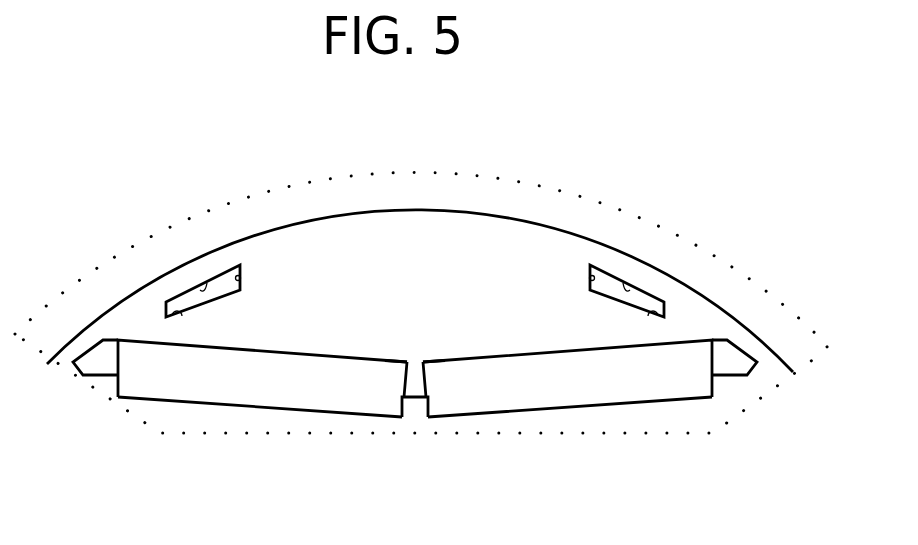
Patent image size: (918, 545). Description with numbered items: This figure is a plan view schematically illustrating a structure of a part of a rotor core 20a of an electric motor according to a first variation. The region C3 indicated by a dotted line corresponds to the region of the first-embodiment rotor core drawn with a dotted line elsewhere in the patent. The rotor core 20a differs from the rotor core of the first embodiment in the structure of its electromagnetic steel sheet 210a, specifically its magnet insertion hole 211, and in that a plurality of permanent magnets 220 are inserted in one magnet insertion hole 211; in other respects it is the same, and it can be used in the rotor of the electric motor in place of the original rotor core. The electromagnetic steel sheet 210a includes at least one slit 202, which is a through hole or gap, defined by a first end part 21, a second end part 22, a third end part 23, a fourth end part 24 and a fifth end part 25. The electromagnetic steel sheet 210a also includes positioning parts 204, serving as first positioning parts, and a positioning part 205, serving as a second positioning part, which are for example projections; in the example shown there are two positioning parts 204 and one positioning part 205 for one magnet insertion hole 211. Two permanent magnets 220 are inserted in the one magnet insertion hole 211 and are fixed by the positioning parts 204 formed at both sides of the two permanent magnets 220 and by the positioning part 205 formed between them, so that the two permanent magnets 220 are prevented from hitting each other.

The rotor core 20a is at (100, 142).
The electromagnetic steel sheet 210a is at (324, 216).
The region C3 is at (421, 172).
The slit 202 is at (243, 250).
The fourth end part 24 is at (206, 282).
The fifth end part 25 is at (246, 280).
The third end part 23 is at (165, 314).
The first end part 21 is at (216, 294).
The second end part 22 is at (188, 318).
The magnet insertion hole 211 is at (419, 360).
The positioning part 204 is at (108, 388).
The permanent magnet 220 is at (300, 393).
The positioning part 205 is at (417, 407).